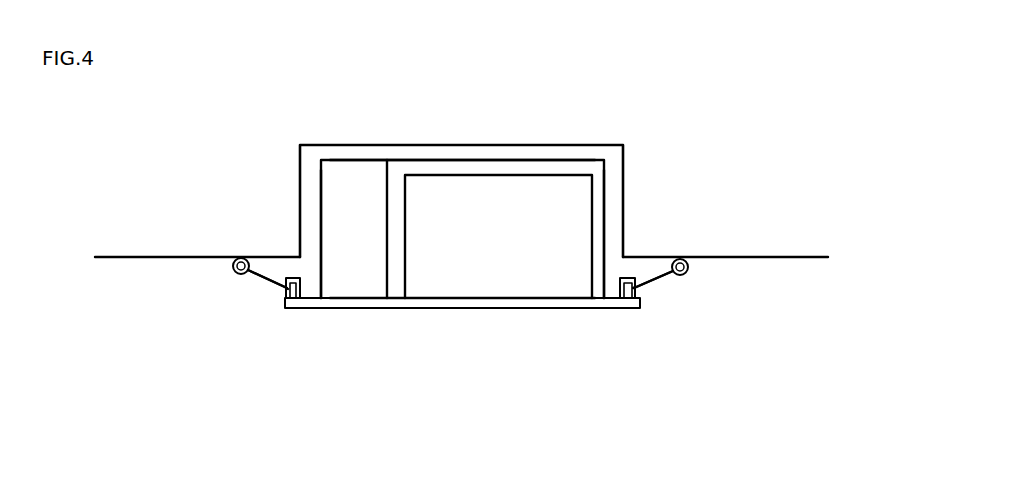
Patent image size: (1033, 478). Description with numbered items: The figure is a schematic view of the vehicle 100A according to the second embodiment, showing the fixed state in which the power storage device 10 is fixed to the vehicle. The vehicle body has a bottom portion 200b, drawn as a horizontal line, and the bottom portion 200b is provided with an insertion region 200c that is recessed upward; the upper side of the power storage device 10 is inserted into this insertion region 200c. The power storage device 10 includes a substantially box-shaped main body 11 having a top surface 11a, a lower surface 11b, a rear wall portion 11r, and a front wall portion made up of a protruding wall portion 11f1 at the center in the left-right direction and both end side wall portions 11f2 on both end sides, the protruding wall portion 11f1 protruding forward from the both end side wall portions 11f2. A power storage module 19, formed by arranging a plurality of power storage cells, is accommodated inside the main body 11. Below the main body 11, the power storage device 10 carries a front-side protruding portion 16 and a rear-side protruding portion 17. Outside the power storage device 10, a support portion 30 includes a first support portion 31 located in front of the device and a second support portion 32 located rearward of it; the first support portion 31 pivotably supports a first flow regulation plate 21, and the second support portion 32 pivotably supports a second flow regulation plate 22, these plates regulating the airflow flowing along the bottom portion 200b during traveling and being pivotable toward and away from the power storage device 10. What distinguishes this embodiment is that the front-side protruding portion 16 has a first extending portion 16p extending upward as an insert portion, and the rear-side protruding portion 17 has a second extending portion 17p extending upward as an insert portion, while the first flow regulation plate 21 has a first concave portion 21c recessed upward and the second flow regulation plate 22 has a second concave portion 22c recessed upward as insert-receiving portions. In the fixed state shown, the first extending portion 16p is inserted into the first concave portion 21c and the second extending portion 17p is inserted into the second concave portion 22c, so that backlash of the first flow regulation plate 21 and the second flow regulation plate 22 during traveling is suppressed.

The vehicle 100A is at (724, 110).
The power storage device 10 is at (413, 329).
The main body 11 is at (548, 153).
The top surface 11a is at (446, 160).
The lower surface 11b is at (492, 309).
The protruding wall portion 11f1 is at (321, 182).
The both end side wall portions 11f2 is at (387, 182).
The rear wall portion 11r is at (605, 202).
The power storage module 19 is at (501, 175).
The front-side protruding portion 16 is at (305, 309).
The first extending portion 16p is at (289, 292).
The rear-side protruding portion 17 is at (610, 309).
The second extending portion 17p is at (636, 292).
The first flow regulation plate 21 is at (277, 280).
The first concave portion 21c is at (300, 278).
The second flow regulation plate 22 is at (648, 280).
The second concave portion 22c is at (621, 278).
The support portion 30 is at (460, 231).
The first support portion 31 is at (241, 257).
The second support portion 32 is at (680, 258).
The bottom portion 200b is at (113, 260).
The insertion region 200c is at (622, 180).